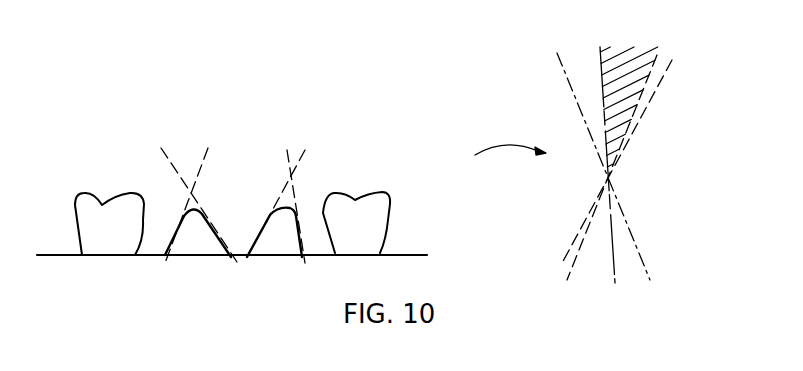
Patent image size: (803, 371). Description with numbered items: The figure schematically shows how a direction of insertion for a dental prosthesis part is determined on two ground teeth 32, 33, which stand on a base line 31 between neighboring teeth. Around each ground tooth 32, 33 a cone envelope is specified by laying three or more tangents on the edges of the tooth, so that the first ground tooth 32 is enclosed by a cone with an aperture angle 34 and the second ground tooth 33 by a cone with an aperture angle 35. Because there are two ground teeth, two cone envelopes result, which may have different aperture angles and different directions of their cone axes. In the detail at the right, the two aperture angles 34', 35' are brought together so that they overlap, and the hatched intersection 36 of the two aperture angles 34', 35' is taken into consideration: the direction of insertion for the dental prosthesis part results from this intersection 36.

The gum line / jaw base 31 is at (417, 203).
The ground tooth 32 is at (195, 247).
The ground tooth 33 is at (272, 247).
The aperture angle of cone 34 is at (199, 187).
The aperture angle of cone 35 is at (282, 187).
The aperture angle of cone 34' is at (601, 146).
The aperture angle of cone 35' is at (635, 162).
The intersection 36 is at (633, 62).